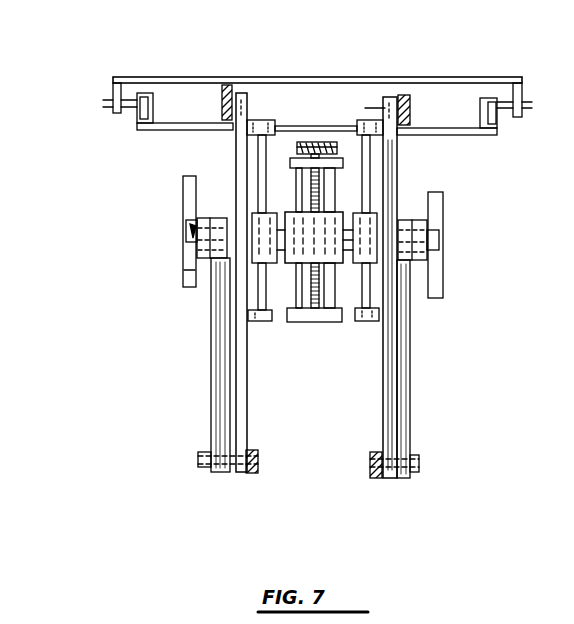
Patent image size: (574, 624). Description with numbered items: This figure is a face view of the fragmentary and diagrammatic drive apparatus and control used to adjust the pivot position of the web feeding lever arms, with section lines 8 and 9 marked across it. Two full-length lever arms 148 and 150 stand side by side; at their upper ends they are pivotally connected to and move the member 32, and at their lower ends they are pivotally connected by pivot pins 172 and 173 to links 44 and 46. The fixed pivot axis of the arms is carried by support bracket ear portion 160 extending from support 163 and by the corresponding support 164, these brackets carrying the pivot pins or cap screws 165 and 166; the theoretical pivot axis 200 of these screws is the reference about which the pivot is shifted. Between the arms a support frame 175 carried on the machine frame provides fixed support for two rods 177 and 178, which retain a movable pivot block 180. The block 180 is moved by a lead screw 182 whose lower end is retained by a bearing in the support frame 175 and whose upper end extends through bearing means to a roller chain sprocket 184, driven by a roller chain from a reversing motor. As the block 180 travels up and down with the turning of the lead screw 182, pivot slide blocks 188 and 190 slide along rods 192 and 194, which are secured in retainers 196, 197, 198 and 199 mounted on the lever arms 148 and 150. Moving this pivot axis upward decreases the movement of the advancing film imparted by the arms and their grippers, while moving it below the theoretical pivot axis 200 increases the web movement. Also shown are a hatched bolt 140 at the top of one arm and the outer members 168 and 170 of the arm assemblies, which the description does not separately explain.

The section line 8- 8 is at (87, 50).
The section line 9- 9 is at (277, 62).
The member 32 is at (410, 100).
The link 44 is at (372, 460).
The link 46 is at (258, 462).
The bolt 140 is at (222, 100).
The arm 148 is at (240, 423).
The arm 150 is at (380, 386).
The support bracket ear portion 160 is at (183, 208).
The support 163 is at (185, 268).
The support 164 is at (420, 226).
The pivot pin or cap screw 165 is at (434, 246).
The pivot pin or cap screw 166 is at (190, 228).
The tube 168 is at (402, 414).
The tube 170 is at (212, 383).
The pivot pin 172 is at (418, 459).
The pivot pin 173 is at (198, 460).
The support frame 175 is at (292, 158).
The rod 177 is at (335, 284).
The rod 178 is at (298, 288).
The movable pivot block 180 is at (332, 222).
The lead screw 182 is at (301, 182).
The roller chain sprocket 184 is at (331, 142).
The pivot slide block 188 is at (368, 250).
The pivot slide block 190 is at (262, 268).
The rod 192 is at (262, 255).
The rod 194 is at (372, 262).
The retainer 196 is at (369, 321).
The retainer 197 is at (383, 126).
The retainer 198 is at (258, 120).
The retainer 199 is at (254, 316).
The pivot axis 200 is at (348, 243).